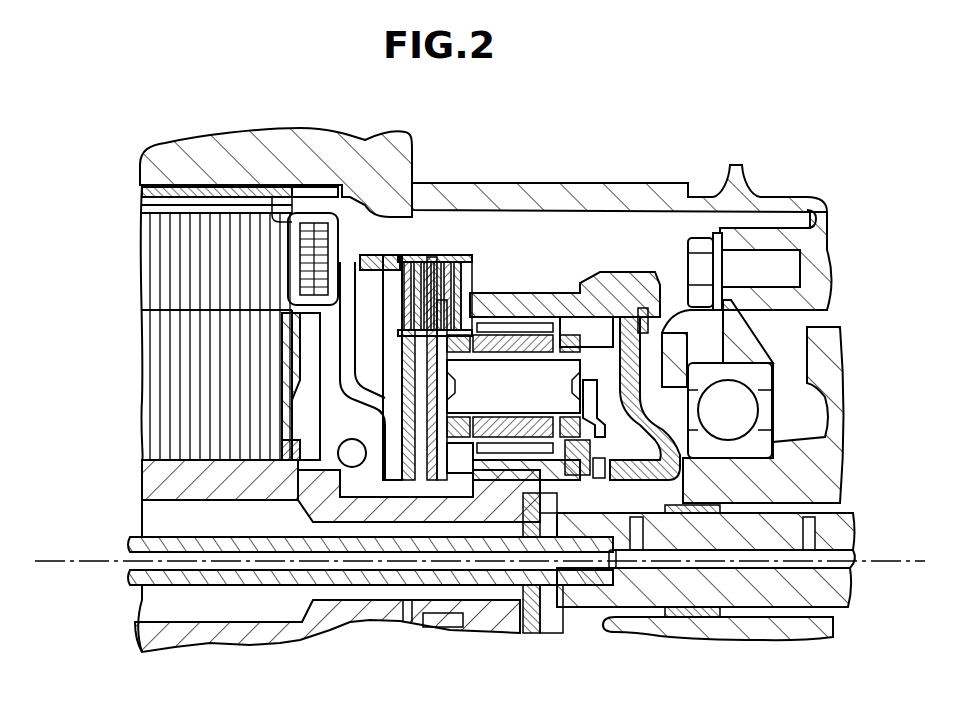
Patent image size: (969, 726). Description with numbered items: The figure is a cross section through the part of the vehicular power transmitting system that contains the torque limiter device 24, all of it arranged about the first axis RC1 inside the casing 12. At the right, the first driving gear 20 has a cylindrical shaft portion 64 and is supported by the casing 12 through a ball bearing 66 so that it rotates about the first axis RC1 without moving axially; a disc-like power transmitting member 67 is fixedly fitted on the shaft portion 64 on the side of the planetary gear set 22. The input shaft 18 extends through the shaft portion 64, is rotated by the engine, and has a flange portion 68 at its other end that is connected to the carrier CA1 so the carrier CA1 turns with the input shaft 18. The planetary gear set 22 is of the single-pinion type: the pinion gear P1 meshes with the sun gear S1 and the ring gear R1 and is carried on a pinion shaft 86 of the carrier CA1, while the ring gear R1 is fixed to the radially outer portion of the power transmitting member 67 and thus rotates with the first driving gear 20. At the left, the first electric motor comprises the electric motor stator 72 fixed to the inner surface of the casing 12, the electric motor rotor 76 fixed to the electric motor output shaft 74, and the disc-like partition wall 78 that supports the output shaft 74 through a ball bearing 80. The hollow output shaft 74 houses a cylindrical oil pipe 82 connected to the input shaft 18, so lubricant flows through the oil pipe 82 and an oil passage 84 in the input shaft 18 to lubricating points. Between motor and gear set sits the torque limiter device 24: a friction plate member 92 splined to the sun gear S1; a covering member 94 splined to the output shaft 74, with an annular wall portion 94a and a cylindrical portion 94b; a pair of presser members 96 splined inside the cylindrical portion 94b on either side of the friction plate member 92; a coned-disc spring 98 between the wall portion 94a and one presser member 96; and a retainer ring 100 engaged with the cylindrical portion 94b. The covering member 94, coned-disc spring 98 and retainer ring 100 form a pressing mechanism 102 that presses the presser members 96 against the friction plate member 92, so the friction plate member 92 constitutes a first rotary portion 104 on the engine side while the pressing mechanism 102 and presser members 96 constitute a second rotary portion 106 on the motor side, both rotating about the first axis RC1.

The casing 12 is at (252, 143).
The input shaft 18 is at (862, 532).
The first driving gear 20 is at (857, 382).
The planetary gear set 22 is at (555, 245).
The torque limiter device 24 is at (549, 260).
The cylindrical shaft portion 64 is at (832, 492).
The ball bearing 66 is at (752, 410).
The power transmitting member 67 is at (640, 350).
The flange portion 68 is at (583, 455).
The electric motor stator 72 is at (148, 288).
The electric motor output shaft 74 is at (148, 483).
The electric motor rotor 76 is at (148, 380).
The partition wall 78 is at (340, 353).
The ball bearing 80 is at (340, 448).
The oil pipe 82 is at (135, 590).
The oil passage 84 is at (857, 565).
The pinion shaft 86 is at (589, 413).
The friction plate member 92 is at (465, 292).
The covering member 94 is at (380, 312).
The wall portion 94a is at (383, 237).
The cylindrical portion 94b is at (452, 262).
The presser members 96 is at (428, 277).
The coned-disc spring 98 is at (438, 235).
The retainer ring 100 is at (518, 232).
The pressing mechanism 102 is at (390, 283).
The first rotary portion 104 is at (475, 368).
The second rotary portion 106 is at (443, 263).
The pinion gear P1 is at (560, 283).
The ring gear R1 is at (633, 290).
The sun gear S1 is at (513, 461).
The carrier CA1 is at (607, 290).
The first axis RC1 is at (78, 560).